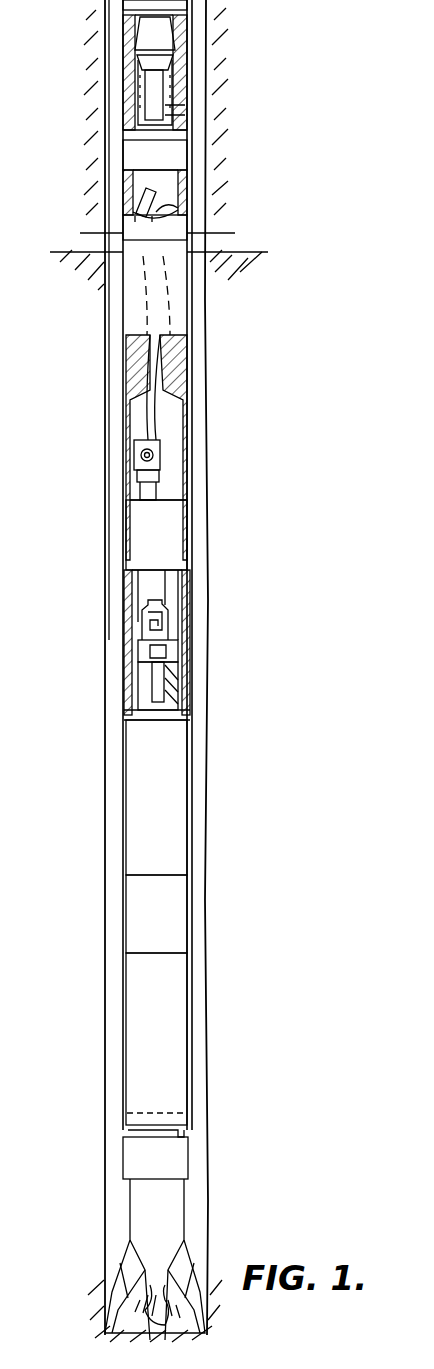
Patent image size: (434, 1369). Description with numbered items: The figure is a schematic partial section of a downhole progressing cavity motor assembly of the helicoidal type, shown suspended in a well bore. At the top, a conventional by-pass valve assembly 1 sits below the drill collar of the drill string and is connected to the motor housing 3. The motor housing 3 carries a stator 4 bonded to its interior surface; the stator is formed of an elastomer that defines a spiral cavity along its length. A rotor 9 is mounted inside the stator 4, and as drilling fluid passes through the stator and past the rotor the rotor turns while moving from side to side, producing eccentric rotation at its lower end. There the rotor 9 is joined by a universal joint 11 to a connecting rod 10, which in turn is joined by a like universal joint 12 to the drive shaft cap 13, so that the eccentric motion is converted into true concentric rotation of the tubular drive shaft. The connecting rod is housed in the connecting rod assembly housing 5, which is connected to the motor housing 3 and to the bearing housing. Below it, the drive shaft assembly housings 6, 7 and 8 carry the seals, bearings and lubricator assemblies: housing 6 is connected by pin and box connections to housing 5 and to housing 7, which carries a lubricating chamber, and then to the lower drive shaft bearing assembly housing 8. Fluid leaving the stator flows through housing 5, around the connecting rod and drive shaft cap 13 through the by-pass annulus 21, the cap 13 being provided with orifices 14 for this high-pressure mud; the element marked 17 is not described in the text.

The by-pass valve assembly 1 is at (191, 100).
The motor housing 3 is at (192, 322).
The stator 4 is at (190, 360).
The connecting rod assembly housing 5 is at (193, 514).
The drive shaft assembly housing 6 is at (175, 806).
The drive shaft assembly housing 7 is at (175, 933).
The lower drive shaft bearing assembly housing 8 is at (180, 1026).
The rotor 9 is at (150, 330).
The connecting rod 10 is at (158, 478).
The universal joint 11 is at (134, 457).
The universal joint 12 is at (168, 628).
The drive shaft cap 13 is at (176, 658).
The orifices 14 is at (140, 683).
The seal 17 is at (174, 680).
The by-pass annulus 21 is at (182, 692).